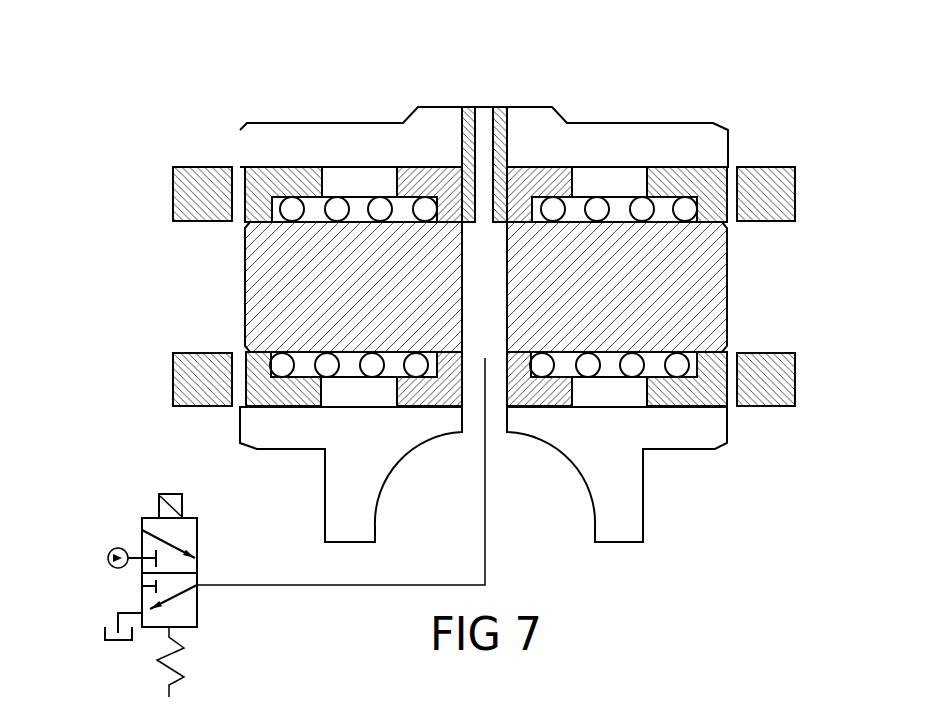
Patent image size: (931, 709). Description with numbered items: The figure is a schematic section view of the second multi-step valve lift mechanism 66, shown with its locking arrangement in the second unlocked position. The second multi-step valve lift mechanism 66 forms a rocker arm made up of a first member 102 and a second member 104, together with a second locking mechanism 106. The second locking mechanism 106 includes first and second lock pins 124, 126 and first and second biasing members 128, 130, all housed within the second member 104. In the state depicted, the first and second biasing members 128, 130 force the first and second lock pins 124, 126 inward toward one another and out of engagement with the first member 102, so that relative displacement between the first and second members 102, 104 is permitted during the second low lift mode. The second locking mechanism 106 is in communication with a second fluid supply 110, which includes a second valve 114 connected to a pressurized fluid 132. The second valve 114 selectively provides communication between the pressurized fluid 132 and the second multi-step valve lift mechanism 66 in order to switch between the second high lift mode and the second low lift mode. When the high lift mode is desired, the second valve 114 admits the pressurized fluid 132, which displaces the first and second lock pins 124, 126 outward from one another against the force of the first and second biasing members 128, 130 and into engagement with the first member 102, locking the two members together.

The second multi-step valve lift mechanism 66 is at (170, 135).
The first member 102 is at (203, 406).
The second member 104 is at (292, 449).
The second locking mechanism 106 is at (192, 268).
The second fluid supply 110 is at (122, 492).
The second valve 114 is at (197, 612).
The first lock pin 124 is at (245, 287).
The second lock pin 126 is at (727, 287).
The first biasing member 128 is at (372, 366).
The second biasing member 130 is at (632, 366).
The pressurized fluid 132 is at (109, 553).